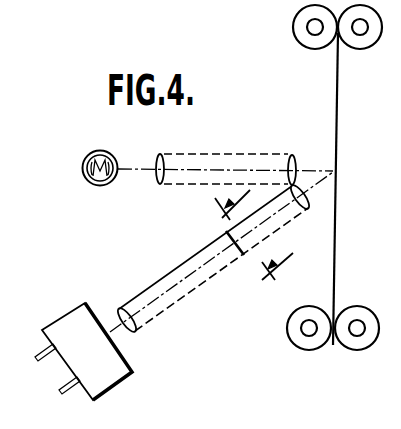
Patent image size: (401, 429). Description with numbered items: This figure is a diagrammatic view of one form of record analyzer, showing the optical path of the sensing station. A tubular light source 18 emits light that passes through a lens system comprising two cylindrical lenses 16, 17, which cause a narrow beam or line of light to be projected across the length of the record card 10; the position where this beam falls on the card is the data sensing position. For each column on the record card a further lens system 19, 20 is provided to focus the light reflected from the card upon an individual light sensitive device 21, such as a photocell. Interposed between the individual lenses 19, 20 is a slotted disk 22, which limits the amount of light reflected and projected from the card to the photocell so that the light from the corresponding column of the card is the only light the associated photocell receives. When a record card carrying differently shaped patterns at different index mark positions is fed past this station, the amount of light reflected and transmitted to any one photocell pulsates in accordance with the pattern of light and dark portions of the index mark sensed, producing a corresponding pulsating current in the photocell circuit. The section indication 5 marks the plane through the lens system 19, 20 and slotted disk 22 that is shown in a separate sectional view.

The record card 10 is at (337, 82).
The section line 5- 5 is at (249, 238).
The cylindrical lens 16 is at (291, 163).
The cylindrical lens 17 is at (158, 155).
The tubular light source 18 is at (106, 151).
The lens 19 is at (308, 199).
The lens 20 is at (133, 334).
The light sensitive device 21 is at (81, 312).
The slotted disk 22 is at (242, 256).